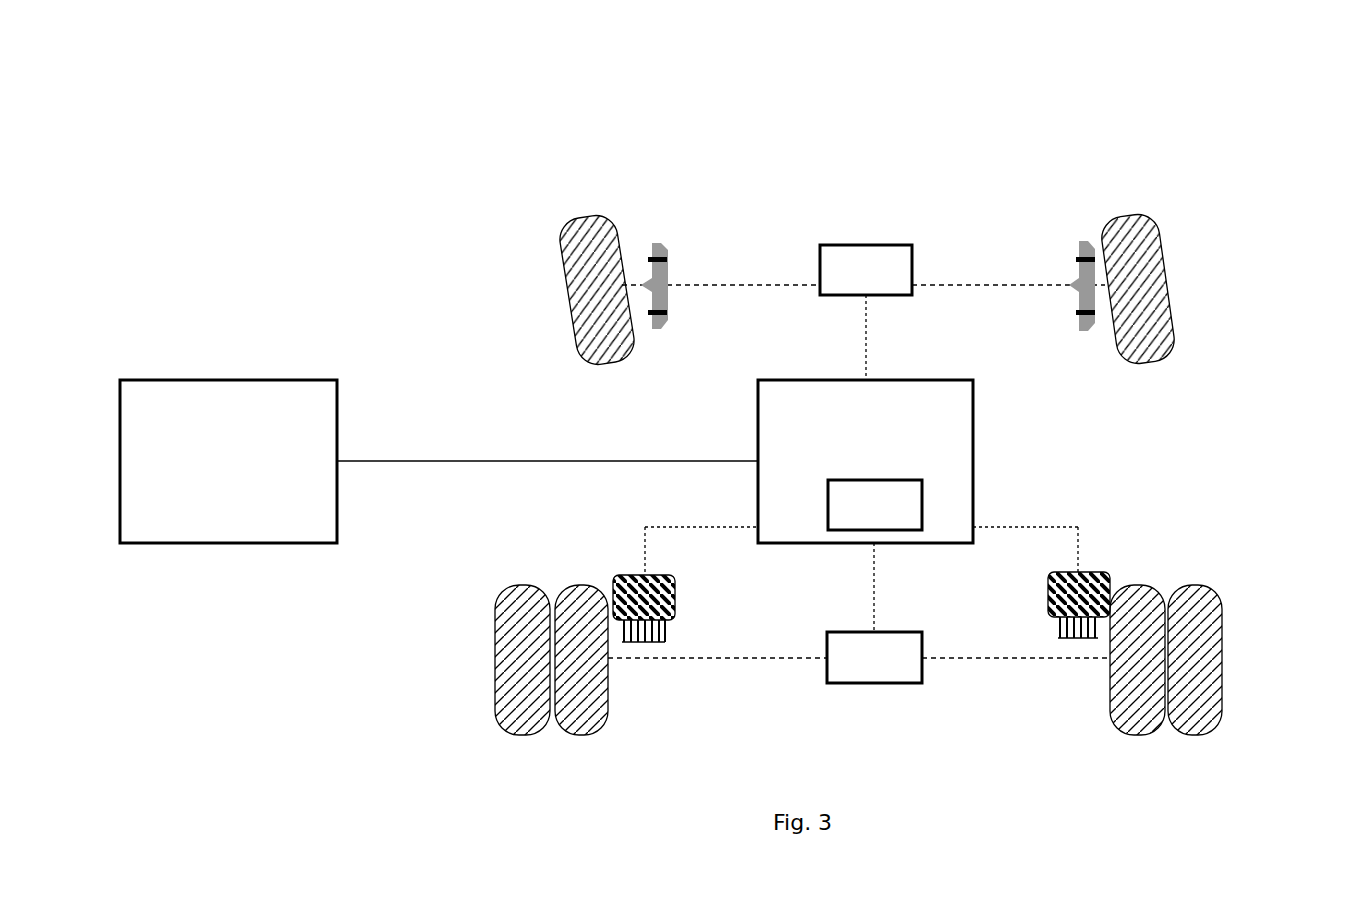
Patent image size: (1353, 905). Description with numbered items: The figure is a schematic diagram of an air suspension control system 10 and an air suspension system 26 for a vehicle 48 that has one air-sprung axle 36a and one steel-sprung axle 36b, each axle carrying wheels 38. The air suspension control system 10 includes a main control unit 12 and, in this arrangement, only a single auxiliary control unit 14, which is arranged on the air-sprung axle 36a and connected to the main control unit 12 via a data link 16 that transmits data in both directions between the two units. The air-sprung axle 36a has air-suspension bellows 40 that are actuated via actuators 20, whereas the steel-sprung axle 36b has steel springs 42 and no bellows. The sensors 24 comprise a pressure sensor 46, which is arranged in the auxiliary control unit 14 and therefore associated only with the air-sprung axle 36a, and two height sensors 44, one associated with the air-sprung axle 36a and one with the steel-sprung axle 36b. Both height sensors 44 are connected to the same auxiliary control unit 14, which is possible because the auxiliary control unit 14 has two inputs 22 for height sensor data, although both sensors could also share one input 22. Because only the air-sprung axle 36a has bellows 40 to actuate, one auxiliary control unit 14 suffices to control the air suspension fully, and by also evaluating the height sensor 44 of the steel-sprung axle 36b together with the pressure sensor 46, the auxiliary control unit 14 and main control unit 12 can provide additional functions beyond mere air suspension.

The air suspension control system 10 is at (619, 86).
The main control unit 12 is at (213, 473).
The auxiliary control unit 14 is at (852, 451).
The data link 16 is at (458, 460).
The actuator 20 is at (1105, 610).
The input 22 is at (866, 380).
The sensor 24 is at (871, 464).
The air suspension system 26 is at (742, 90).
The air-sprung axle 36a is at (988, 658).
The steel-sprung axle 36b is at (1020, 285).
The wheel 38 is at (901, 473).
The air-suspension bellows 40 is at (1095, 587).
The steel spring 42 is at (1090, 275).
The height sensor 44 is at (838, 282).
The pressure sensor 46 is at (847, 517).
The vehicle 48 is at (1147, 100).